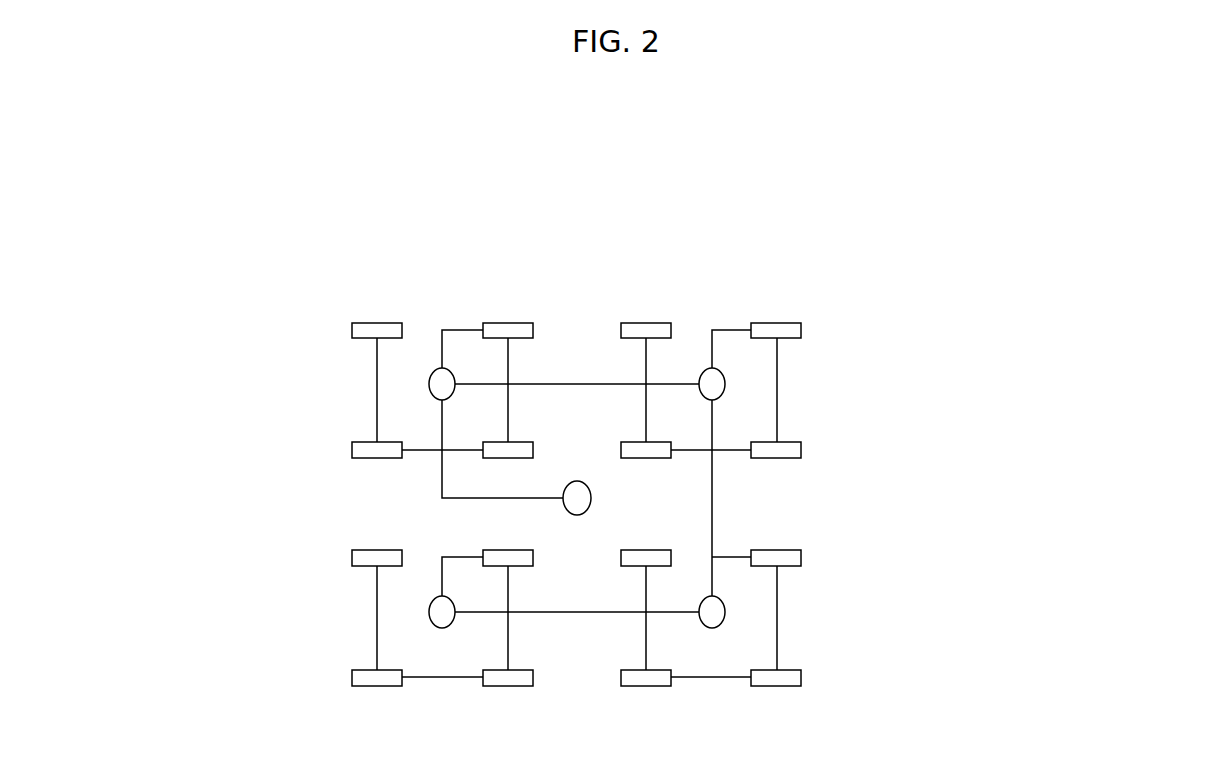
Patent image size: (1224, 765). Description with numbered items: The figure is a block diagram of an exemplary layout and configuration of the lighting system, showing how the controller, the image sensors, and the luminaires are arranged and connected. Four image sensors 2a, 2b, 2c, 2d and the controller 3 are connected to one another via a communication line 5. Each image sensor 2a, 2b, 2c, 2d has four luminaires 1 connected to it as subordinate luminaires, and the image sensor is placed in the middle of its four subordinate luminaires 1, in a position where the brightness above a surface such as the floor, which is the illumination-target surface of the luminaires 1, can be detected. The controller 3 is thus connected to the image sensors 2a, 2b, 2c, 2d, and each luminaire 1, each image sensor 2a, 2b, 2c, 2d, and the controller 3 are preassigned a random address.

The luminaire 1 is at (788, 323).
The image sensor 2a is at (728, 390).
The image sensor 2b is at (422, 388).
The image sensor 2c is at (422, 617).
The image sensor 2d is at (726, 620).
The controller 3 is at (592, 507).
The communication line 5 is at (712, 543).